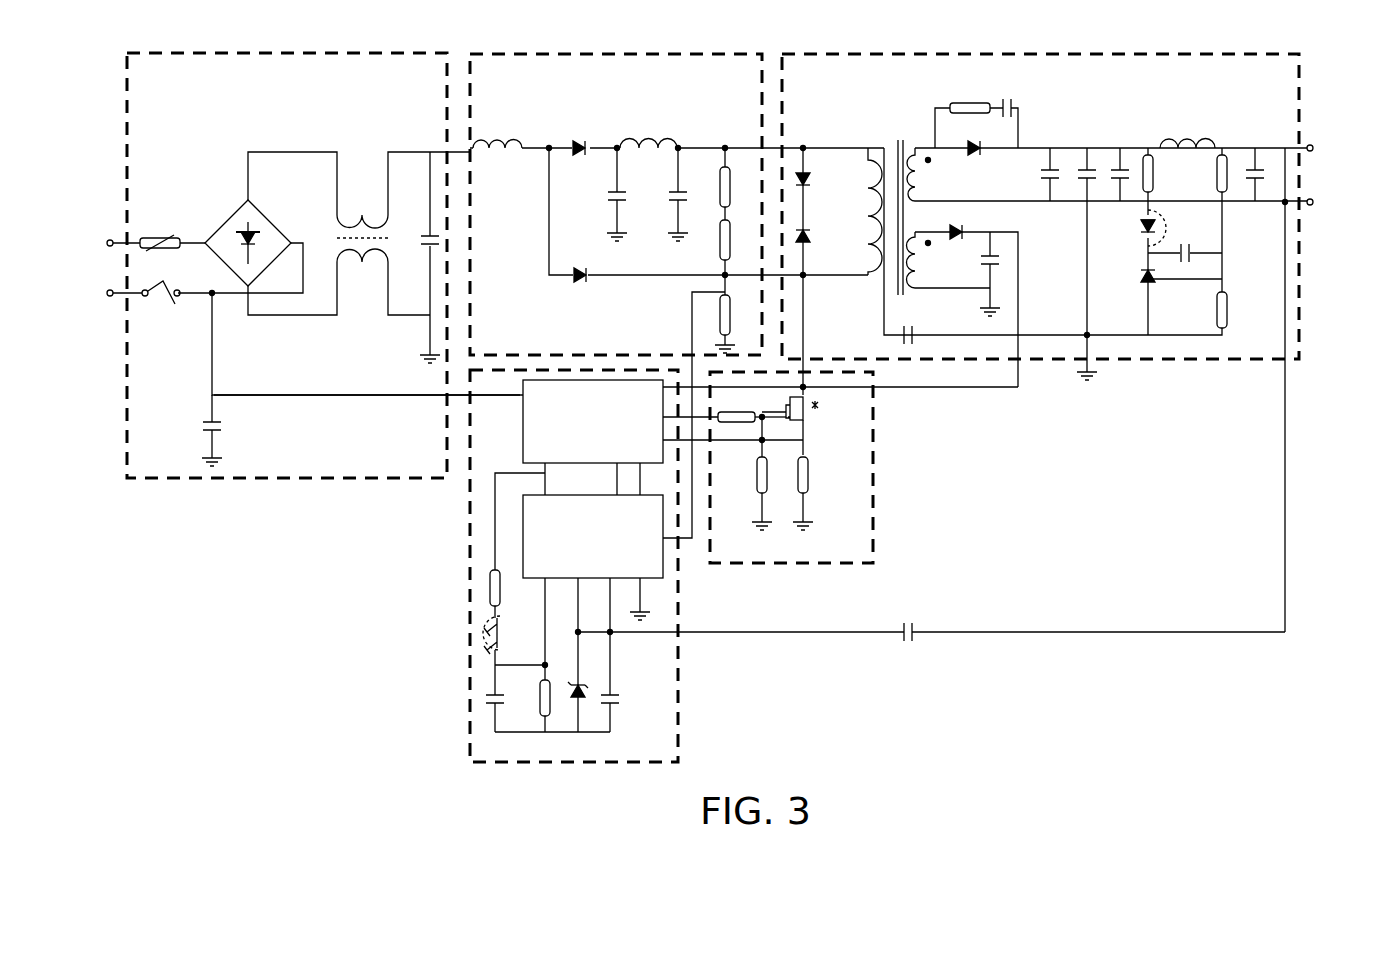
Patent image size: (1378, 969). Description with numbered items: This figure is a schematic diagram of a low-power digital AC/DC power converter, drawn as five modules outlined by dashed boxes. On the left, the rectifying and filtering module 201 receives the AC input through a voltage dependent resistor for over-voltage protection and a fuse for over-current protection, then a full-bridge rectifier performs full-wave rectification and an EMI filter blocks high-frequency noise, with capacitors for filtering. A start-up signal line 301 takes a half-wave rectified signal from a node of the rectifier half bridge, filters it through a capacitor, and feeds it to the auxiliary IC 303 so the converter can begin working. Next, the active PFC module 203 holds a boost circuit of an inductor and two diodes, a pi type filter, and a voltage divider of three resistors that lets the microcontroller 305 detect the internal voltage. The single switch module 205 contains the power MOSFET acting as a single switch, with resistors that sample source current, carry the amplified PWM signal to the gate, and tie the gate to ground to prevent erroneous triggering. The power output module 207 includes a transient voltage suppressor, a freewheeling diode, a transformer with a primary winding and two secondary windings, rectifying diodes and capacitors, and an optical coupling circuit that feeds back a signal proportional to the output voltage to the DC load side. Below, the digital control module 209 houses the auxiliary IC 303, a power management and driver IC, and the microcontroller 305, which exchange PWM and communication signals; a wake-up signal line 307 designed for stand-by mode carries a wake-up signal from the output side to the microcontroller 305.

The rectifying and filtering module 201 is at (262, 76).
The active PFC module 203 is at (554, 78).
The single switch module 205 is at (866, 512).
The power output module 207 is at (839, 74).
The digital control module 209 is at (660, 678).
The start-up signal line 301 is at (342, 396).
The auxiliary IC 303 is at (579, 475).
The microcontroller 305 is at (579, 613).
The wake-up signal line 307 is at (1005, 637).